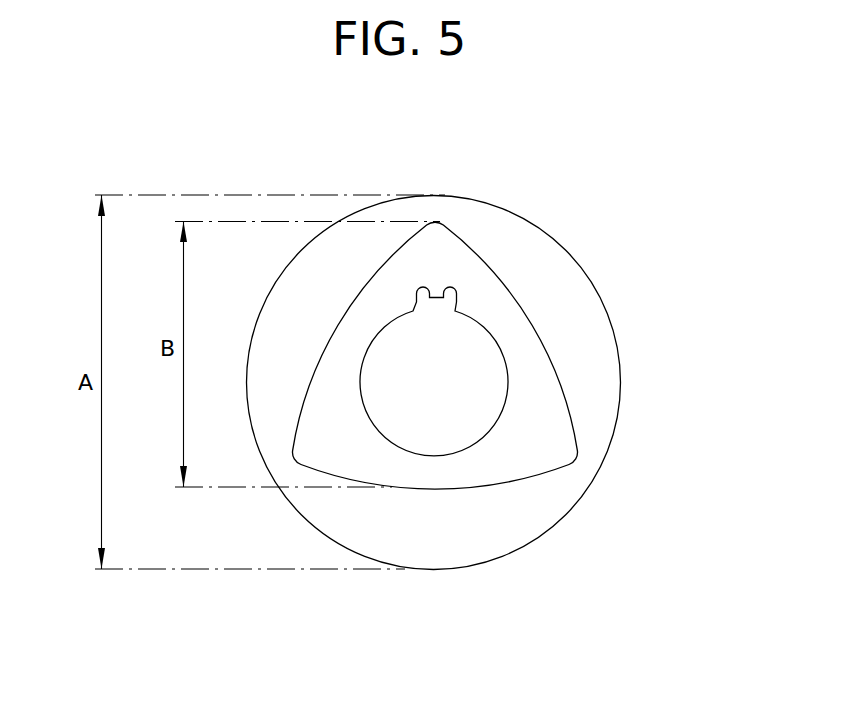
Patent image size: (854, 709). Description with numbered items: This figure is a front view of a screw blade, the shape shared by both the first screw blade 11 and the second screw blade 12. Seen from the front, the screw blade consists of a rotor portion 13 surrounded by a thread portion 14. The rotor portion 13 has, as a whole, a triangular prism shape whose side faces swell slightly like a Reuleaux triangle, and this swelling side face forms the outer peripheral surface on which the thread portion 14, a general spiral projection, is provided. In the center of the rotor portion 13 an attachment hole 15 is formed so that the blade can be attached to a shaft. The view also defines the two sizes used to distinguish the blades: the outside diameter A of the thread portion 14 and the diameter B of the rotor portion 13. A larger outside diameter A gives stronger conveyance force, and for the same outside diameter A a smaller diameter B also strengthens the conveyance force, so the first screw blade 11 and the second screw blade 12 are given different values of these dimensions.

The first screw blade 11 is at (549, 181).
The second screw blade 12 is at (549, 181).
The rotor portion 13 is at (542, 390).
The thread portion 14 is at (590, 320).
The attachment hole 15 is at (458, 447).